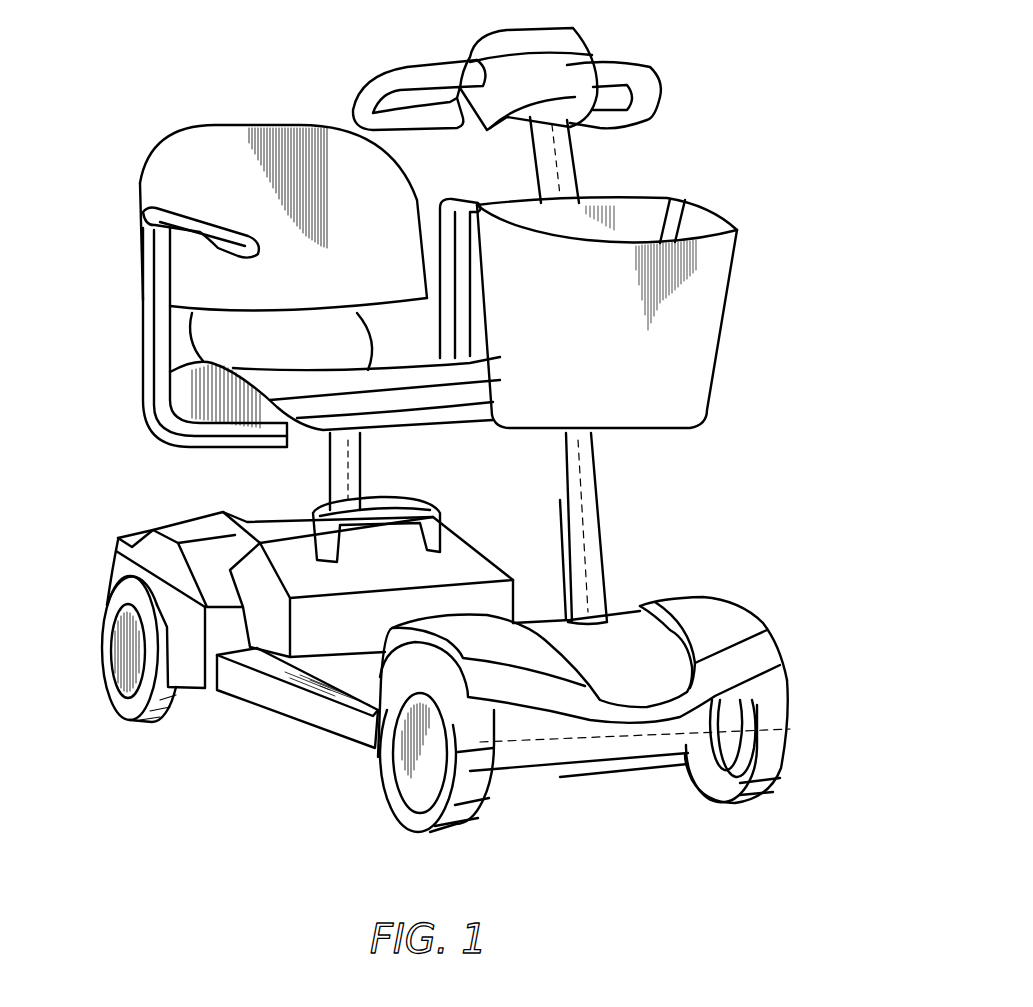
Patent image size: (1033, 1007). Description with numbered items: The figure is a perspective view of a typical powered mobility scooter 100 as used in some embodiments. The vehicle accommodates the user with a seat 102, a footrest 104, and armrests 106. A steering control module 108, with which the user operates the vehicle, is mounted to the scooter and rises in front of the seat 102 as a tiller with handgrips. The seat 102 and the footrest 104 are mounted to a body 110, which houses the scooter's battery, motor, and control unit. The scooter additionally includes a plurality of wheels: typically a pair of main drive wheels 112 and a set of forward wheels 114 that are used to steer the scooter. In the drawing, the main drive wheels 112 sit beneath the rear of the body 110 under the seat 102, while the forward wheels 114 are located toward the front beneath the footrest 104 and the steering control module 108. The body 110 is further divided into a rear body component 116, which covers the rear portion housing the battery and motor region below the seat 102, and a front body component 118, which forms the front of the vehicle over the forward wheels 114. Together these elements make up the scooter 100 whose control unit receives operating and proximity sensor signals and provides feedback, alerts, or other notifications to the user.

The powered mobility scooter 100 is at (768, 164).
The seat 102 is at (180, 155).
The footrest 104 is at (342, 685).
The armrests 106 is at (162, 213).
The steering control module 108 is at (628, 63).
The body 110 is at (337, 718).
The main drive wheels 112 is at (104, 633).
The forward wheels 114 is at (775, 695).
The rear body component 116 is at (187, 522).
The front body component 118 is at (718, 607).